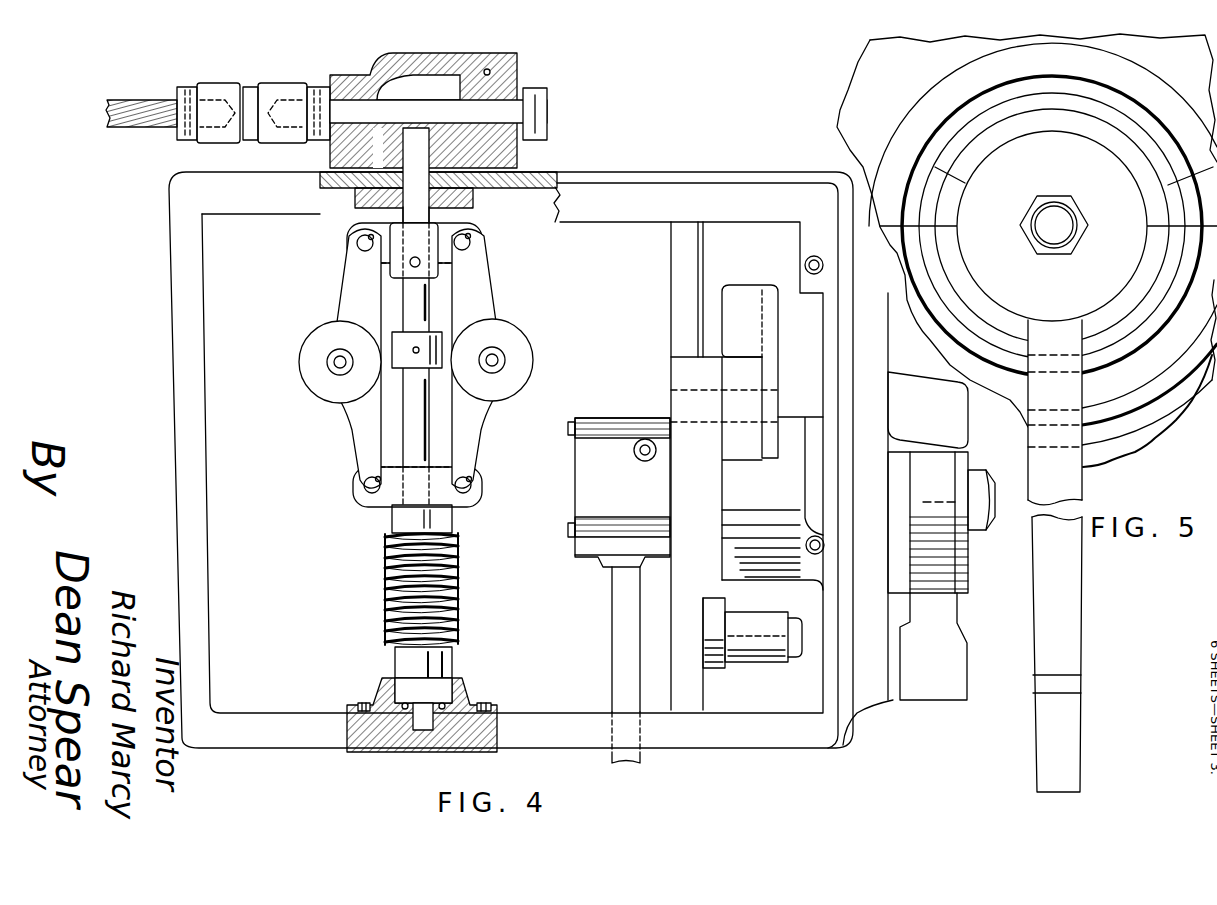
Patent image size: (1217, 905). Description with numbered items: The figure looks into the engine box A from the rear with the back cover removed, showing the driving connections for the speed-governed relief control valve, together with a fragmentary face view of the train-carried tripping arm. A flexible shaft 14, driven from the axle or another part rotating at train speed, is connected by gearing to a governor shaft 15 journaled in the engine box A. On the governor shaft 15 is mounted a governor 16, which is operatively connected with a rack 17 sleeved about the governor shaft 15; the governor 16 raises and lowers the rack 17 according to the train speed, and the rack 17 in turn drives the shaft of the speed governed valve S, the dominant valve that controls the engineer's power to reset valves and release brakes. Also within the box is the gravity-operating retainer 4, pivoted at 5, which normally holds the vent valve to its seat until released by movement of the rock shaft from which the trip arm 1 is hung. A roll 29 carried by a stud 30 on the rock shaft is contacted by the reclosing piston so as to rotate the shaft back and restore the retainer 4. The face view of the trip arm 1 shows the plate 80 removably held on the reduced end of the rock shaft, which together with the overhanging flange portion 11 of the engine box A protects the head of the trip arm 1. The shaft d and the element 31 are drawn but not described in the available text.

In FIG. 4, the housing (engine box) A is at (700, 178).
In FIG. 4, the flexible shaft 14 is at (148, 128).
In FIG. 4, the governor shaft 15 is at (432, 303).
In FIG. 4, the governor 16 is at (513, 338).
In FIG. 4, the rack 17 is at (455, 567).
In FIG. 4, the gravity-operating retainer 4 is at (735, 296).
In FIG. 4, the pivot of retainer 5 is at (682, 403).
In FIG. 4, the speed governed valve S is at (583, 488).
In FIG. 4, the shaft d is at (620, 622).
In FIG. 4, the roll 29 is at (757, 655).
In FIG. 4, the stud 30 is at (803, 648).
In FIG. 4, the overhanging flange portion 11 is at (950, 418).
In FIG. 5, the trip arm 1 is at (1207, 142).
In FIG. 5, the plate 80 is at (1052, 226).
In FIG. 5, the shaft nut 31 is at (1057, 224).